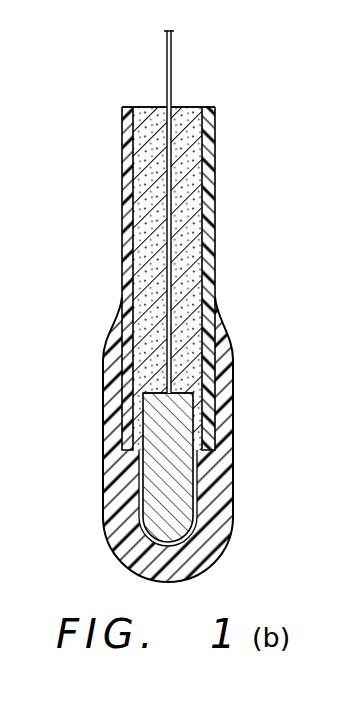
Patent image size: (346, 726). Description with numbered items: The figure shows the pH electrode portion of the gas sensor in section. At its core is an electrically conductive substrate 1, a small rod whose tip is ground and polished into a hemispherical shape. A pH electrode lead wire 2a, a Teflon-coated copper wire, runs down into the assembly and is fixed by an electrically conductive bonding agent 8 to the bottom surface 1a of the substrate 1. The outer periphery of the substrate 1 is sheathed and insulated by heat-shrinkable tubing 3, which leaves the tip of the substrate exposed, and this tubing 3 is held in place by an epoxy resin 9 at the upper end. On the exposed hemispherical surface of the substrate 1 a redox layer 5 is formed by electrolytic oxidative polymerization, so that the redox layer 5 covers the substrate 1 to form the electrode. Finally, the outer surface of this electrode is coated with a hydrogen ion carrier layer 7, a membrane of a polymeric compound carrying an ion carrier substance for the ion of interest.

The electrically conductive substrate 1 is at (165, 503).
The bottom surface of the electrically conductive substrate 1a is at (160, 392).
The pH electrode lead wire 2a is at (172, 74).
The heat-shrinkable tubing 3 is at (210, 268).
The redox layer 5 is at (202, 548).
The hydrogen ion carrier layer 7 is at (222, 466).
The electrically conductive bonding agent 8 is at (180, 386).
The epoxy resin 9 is at (216, 137).